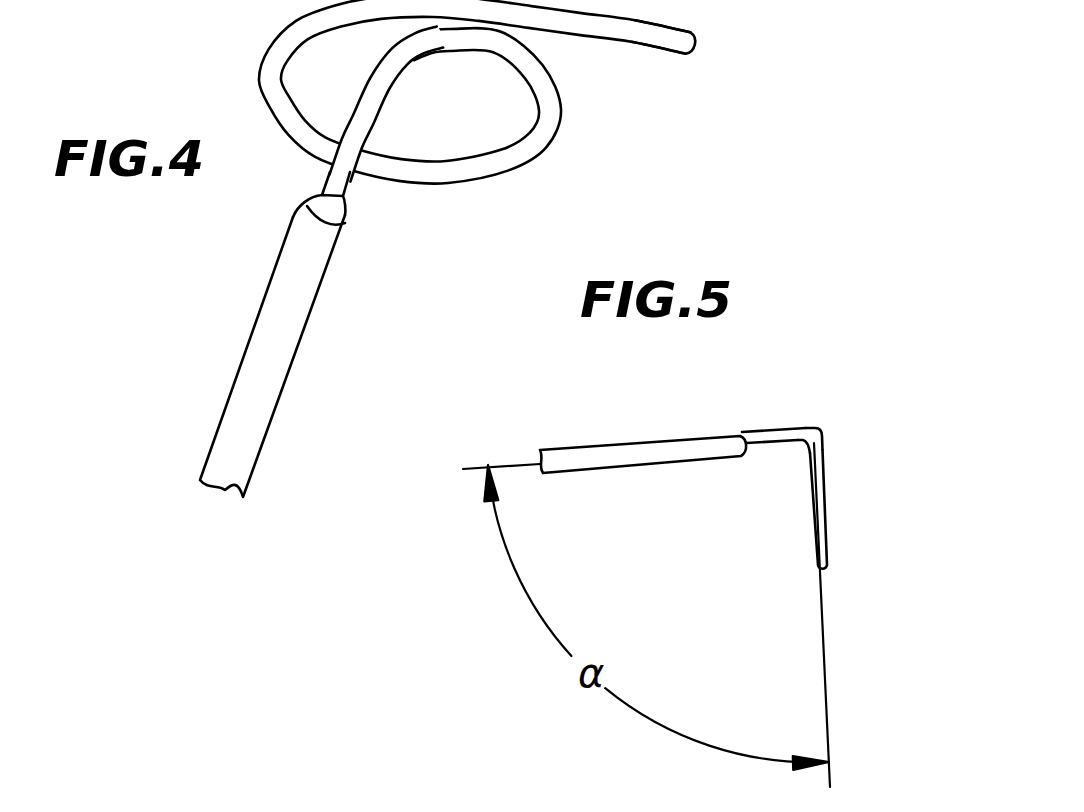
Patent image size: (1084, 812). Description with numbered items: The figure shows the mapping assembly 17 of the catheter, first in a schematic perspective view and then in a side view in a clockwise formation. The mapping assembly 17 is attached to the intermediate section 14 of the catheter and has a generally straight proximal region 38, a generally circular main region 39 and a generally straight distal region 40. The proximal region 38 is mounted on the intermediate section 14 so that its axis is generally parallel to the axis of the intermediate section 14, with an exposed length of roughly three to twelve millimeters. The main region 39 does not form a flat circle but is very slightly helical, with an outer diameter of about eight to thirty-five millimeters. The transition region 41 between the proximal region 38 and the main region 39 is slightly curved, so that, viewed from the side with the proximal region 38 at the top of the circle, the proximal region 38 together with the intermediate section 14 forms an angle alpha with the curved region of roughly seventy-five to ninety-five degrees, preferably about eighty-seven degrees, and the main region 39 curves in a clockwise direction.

In FIG. 4, the intermediate section 14 is at (280, 343).
In FIG. 5, the intermediate section 14 is at (648, 440).
In FIG. 4, the mapping assembly 17 is at (486, 109).
In FIG. 4, the proximal region 38 is at (330, 177).
In FIG. 5, the proximal region 38 is at (762, 427).
In FIG. 4, the main region 39 is at (282, 43).
In FIG. 5, the main region 39 is at (824, 527).
In FIG. 4, the distal region 40 is at (653, 40).
In FIG. 5, the distal region 40 is at (804, 428).
In FIG. 5, the transition region 41 is at (806, 440).